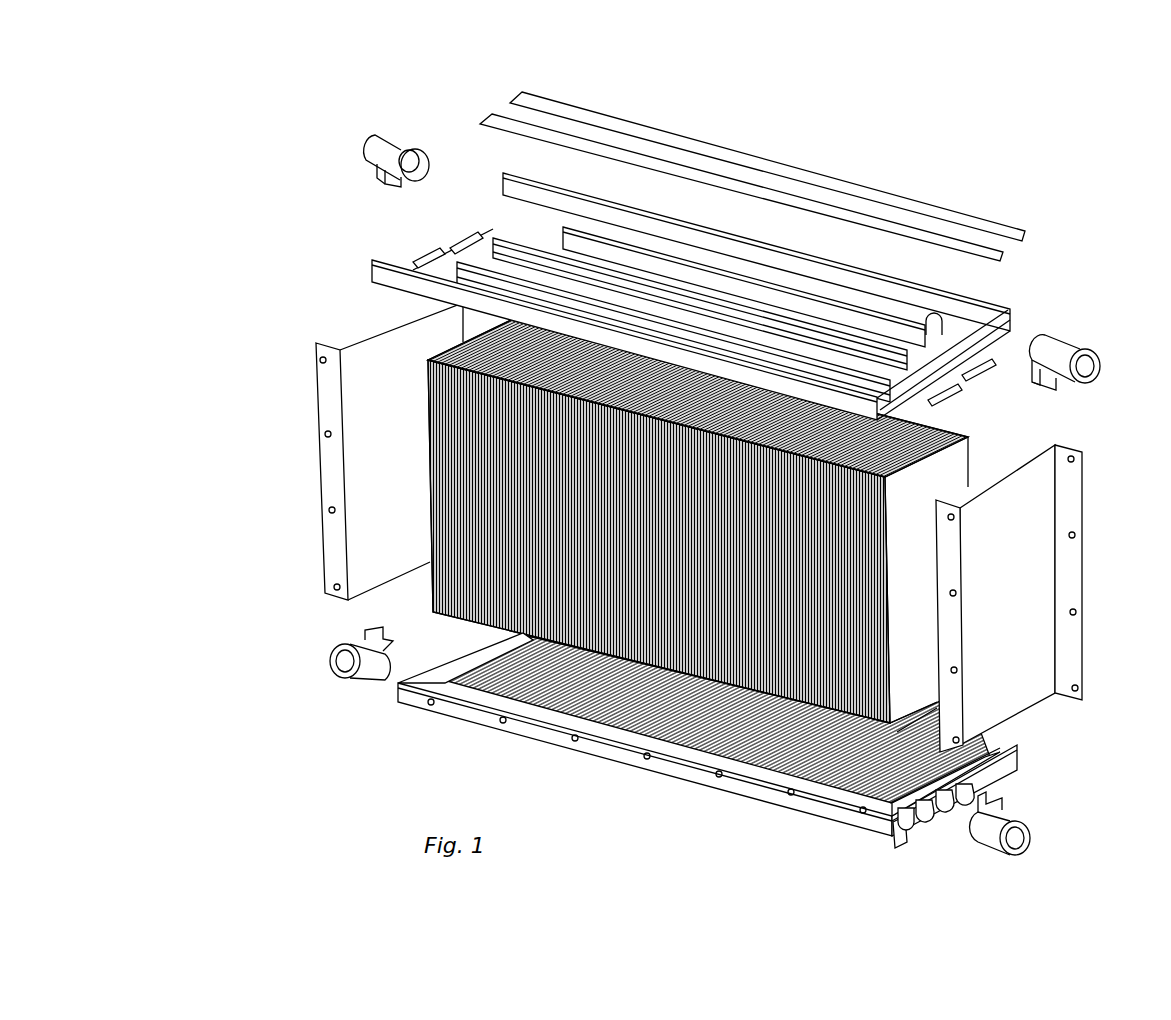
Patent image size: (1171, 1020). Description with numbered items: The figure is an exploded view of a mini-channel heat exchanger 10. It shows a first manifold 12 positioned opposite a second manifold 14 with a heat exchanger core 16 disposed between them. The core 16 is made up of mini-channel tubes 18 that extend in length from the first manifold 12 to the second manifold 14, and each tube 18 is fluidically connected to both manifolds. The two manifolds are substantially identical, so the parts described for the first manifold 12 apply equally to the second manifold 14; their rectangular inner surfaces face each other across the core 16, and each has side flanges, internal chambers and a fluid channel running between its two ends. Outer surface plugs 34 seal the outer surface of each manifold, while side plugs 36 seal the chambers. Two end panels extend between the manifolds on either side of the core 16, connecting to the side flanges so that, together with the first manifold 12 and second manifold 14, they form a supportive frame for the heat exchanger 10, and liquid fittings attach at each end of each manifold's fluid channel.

The mini-channel heat exchanger 10 is at (293, 130).
The first manifold 12 is at (692, 260).
The second manifold 14 is at (749, 765).
The heat exchanger core 16 is at (791, 526).
The mini-channel tubes 18 is at (958, 436).
The outer surface plugs 34 is at (862, 192).
The side plugs 36 is at (460, 225).